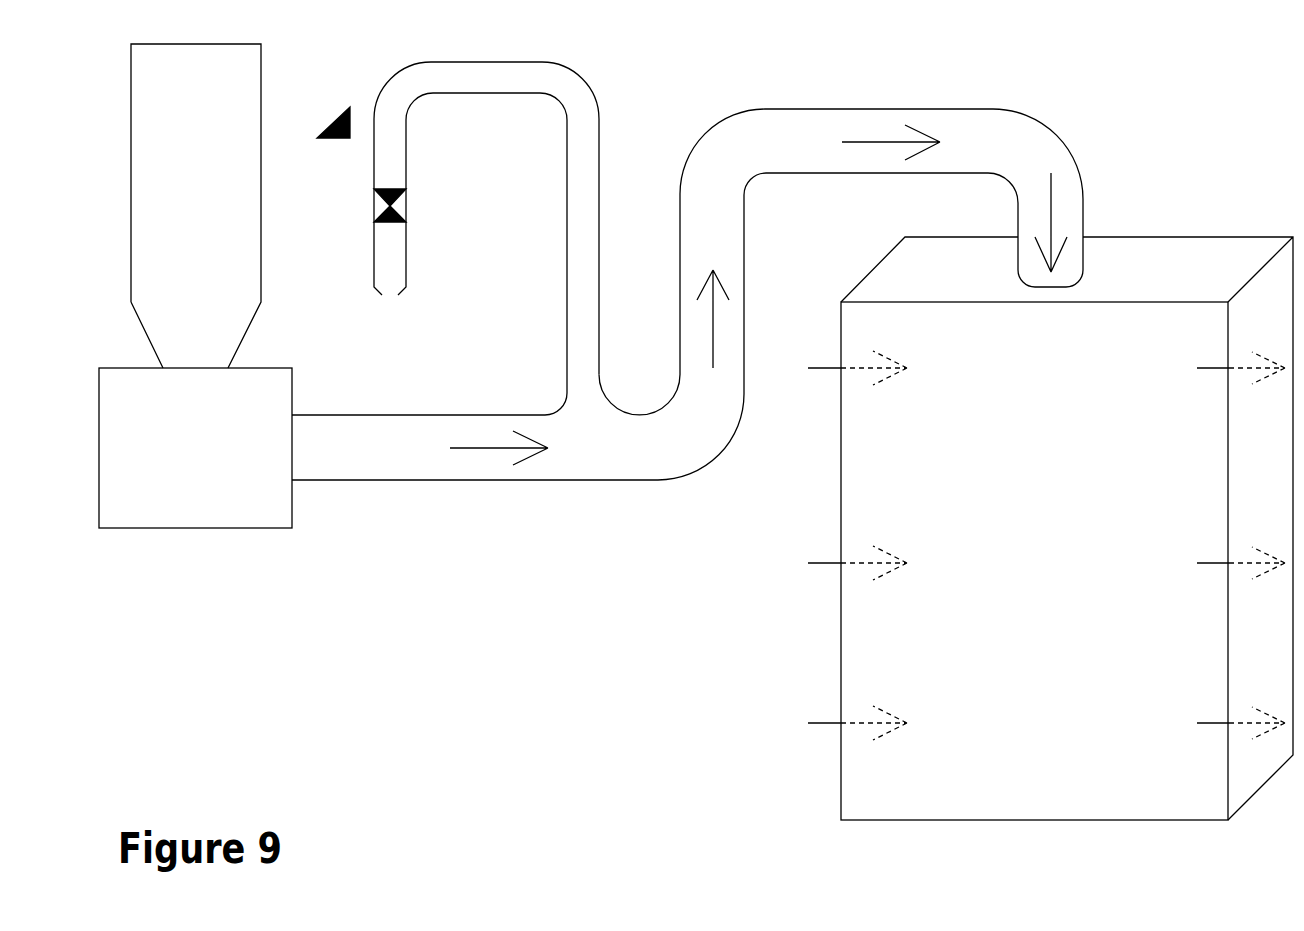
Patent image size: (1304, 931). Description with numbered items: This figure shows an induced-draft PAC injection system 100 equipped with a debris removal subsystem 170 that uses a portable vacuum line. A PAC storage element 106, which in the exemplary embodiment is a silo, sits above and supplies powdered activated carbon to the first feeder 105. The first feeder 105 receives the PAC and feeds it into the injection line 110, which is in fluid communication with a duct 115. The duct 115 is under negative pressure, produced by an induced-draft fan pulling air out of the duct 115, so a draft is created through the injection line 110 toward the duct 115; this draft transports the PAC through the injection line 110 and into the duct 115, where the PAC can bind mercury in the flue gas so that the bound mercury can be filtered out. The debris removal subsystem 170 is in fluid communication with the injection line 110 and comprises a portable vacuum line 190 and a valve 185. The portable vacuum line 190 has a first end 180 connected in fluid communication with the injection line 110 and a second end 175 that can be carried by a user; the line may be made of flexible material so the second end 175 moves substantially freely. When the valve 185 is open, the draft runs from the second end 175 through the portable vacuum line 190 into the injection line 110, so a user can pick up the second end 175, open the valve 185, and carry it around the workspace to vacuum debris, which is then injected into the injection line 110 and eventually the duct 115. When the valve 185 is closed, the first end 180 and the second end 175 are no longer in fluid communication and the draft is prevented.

The induced-draft PAC injection system 100 is at (731, 54).
The first feeder 105 is at (228, 497).
The PAC storage element 106 is at (148, 173).
The injection line 110 is at (682, 335).
The duct 115 is at (907, 625).
The debris removal subsystem 170 is at (332, 118).
The second end 175 is at (374, 270).
The first end 180 is at (567, 350).
The valve 185 is at (392, 202).
The portable vacuum line 190 is at (502, 93).